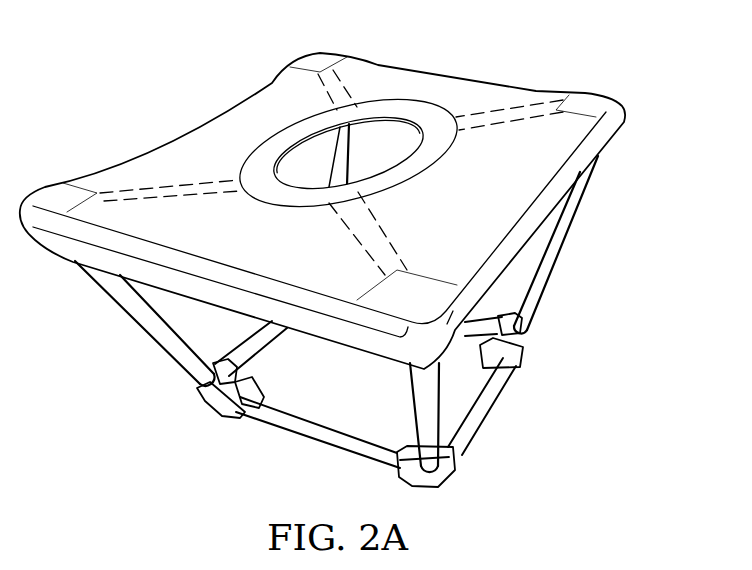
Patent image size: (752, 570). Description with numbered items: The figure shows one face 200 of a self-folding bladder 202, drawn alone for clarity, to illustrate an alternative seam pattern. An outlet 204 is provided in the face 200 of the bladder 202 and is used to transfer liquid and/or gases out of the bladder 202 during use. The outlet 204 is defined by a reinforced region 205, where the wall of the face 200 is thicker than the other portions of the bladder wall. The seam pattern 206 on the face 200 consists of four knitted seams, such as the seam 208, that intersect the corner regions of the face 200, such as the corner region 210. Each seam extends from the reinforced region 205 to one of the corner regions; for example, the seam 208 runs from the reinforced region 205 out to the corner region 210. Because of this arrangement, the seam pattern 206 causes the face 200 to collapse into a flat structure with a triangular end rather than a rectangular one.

The face 200 is at (481, 97).
The bladder 202 is at (122, 366).
The outlet 204 is at (407, 137).
The reinforced region 205 is at (262, 178).
The seam pattern 206 is at (166, 162).
The seam 208 is at (350, 227).
The corner region 210 is at (433, 278).